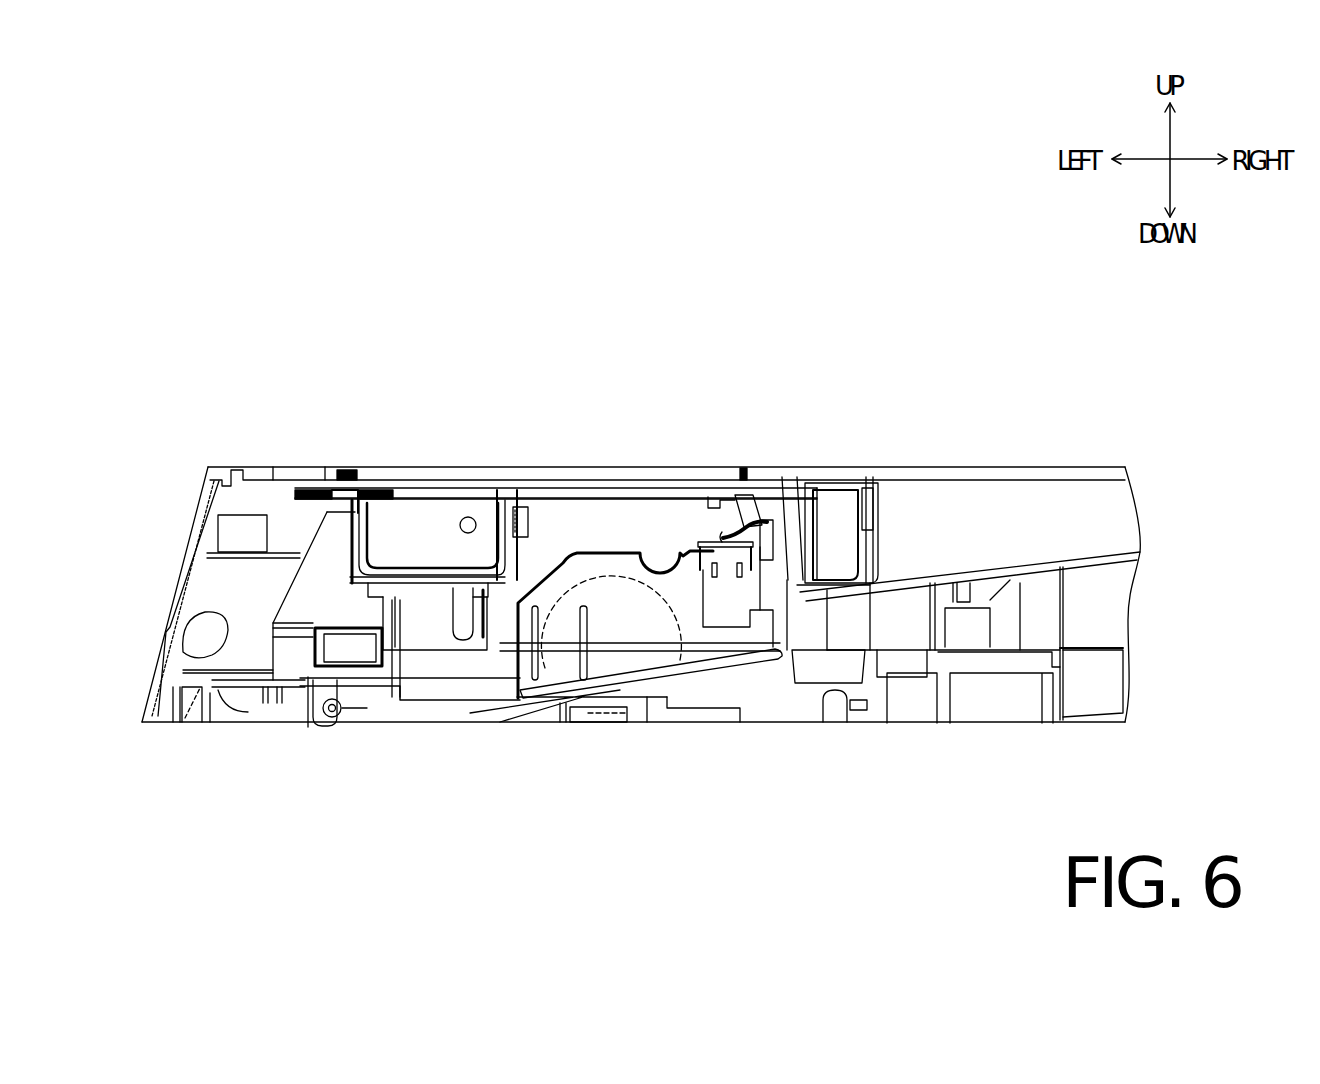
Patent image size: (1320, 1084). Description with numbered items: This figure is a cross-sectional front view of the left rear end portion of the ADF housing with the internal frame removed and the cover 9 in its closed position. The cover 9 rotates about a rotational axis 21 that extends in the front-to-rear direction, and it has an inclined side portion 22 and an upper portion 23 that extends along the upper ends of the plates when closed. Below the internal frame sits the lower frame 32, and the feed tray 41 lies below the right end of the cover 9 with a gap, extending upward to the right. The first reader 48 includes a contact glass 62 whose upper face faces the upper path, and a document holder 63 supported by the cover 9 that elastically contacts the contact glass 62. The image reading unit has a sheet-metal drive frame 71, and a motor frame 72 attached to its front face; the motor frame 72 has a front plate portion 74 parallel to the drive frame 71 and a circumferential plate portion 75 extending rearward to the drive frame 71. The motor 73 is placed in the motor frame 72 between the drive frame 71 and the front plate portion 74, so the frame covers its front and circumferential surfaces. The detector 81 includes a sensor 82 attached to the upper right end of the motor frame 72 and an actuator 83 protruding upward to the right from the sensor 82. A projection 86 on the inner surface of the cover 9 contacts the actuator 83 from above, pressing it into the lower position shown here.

The cover 9 is at (239, 454).
The rotational axis 21 is at (192, 654).
The side portion 22 is at (190, 537).
The upper portion 23 is at (432, 467).
The lower frame 32 is at (590, 707).
The feed tray 41 is at (1022, 570).
The first reader 48 is at (442, 603).
The contact glass 62 is at (422, 578).
The document holder 63 is at (358, 552).
The drive frame 71 is at (567, 499).
The motor frame 72 is at (614, 538).
The motor 73 is at (677, 680).
The front plate portion 74 is at (730, 600).
The circumferential plate portion 75 is at (542, 582).
The detector 81 is at (769, 591).
The sensor 82 is at (753, 653).
The actuator 83 is at (775, 522).
The projection 86 is at (748, 507).